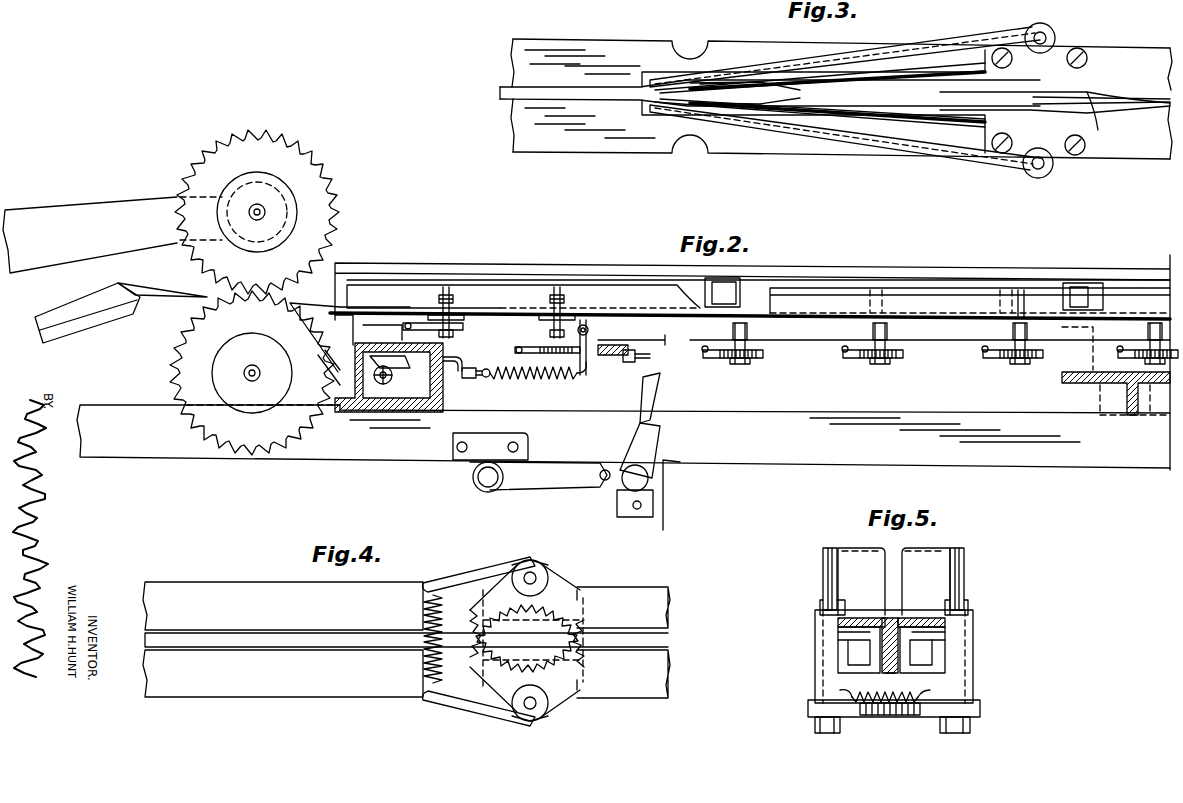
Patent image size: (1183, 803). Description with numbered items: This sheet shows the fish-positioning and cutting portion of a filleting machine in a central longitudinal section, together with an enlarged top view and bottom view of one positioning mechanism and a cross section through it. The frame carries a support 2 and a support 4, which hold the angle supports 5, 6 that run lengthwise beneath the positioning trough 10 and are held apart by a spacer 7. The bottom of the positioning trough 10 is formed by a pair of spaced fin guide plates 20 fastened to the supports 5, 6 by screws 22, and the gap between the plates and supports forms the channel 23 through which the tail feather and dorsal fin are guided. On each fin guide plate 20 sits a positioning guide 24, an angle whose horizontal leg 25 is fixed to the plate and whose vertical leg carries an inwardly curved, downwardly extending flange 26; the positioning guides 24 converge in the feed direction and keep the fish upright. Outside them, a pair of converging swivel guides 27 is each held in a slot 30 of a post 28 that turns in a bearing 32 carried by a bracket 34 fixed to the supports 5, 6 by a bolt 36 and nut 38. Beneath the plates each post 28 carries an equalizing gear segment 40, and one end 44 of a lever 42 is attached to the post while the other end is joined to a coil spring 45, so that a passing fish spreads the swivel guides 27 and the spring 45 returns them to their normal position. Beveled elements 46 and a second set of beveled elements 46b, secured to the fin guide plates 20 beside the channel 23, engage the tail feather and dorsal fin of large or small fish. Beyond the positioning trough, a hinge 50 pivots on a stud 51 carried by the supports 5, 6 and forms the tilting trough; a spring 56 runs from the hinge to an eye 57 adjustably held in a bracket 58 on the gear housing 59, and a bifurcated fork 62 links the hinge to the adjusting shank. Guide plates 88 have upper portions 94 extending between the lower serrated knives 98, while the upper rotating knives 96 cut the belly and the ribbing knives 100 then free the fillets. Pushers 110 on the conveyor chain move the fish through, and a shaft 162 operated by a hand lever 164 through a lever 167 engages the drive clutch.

In FIG. 2, the support 2 is at (1087, 385).
In FIG. 2, the support 4 is at (636, 354).
In FIG. 2, the angle support 5 is at (812, 334).
In FIG. 5, the angle support 5 is at (836, 630).
In FIG. 2, the angle support 6 is at (666, 338).
In FIG. 5, the angle support 6 is at (946, 632).
In FIG. 3, the spacer 7 is at (831, 131).
In FIG. 4, the spacer 7 is at (413, 638).
In FIG. 5, the spacer 7 is at (888, 679).
In FIG. 2, the positioning trough 10 is at (604, 300).
In FIG. 3, the fin guide plate 20 is at (1128, 62).
In FIG. 4, the fin guide plate 20 is at (240, 592).
In FIG. 5, the fin guide plate 20 is at (856, 618).
In FIG. 3, the screw 22 is at (1067, 60).
In FIG. 3, the channel 23 is at (1135, 98).
In FIG. 5, the channel 23 is at (895, 618).
In FIG. 3, the positioning guide 24 is at (912, 92).
In FIG. 2, the positioning guide 24 is at (960, 310).
In FIG. 3, the horizontal leg 25 is at (887, 62).
In FIG. 3, the flange 26 is at (748, 80).
In FIG. 3, the swivel guide 27 is at (844, 56).
In FIG. 2, the swivel guide 27 is at (912, 295).
In FIG. 5, the swivel guide 27 is at (857, 556).
In FIG. 3, the post 28 is at (1055, 38).
In FIG. 2, the post 28 is at (1021, 290).
In FIG. 4, the post 28 is at (540, 575).
In FIG. 5, the post 28 is at (822, 570).
In FIG. 5, the slot 30 is at (832, 550).
In FIG. 5, the bearing 32 is at (818, 668).
In FIG. 4, the bracket 34 is at (580, 590).
In FIG. 5, the bracket 34 is at (840, 638).
In FIG. 5, the bolt 36 is at (859, 650).
In FIG. 5, the nut 38 is at (922, 650).
In FIG. 2, the equalizing gear segment 40 is at (464, 332).
In FIG. 4, the equalizing gear segment 40 is at (584, 614).
In FIG. 5, the equalizing gear segment 40 is at (882, 718).
In FIG. 4, the lever 42 is at (466, 575).
In FIG. 4, the end of lever 44 is at (530, 560).
In FIG. 5, the end of lever 44 is at (815, 720).
In FIG. 2, the coil spring 45 is at (408, 323).
In FIG. 4, the coil spring 45 is at (420, 665).
In FIG. 5, the coil spring 45 is at (885, 685).
In FIG. 3, the beveled element 46 is at (1098, 110).
In FIG. 3, the beveled element 46b is at (755, 92).
In FIG. 2, the hinge 50 is at (588, 362).
In FIG. 2, the stud 51 is at (588, 325).
In FIG. 2, the spring 56 is at (552, 380).
In FIG. 2, the eye 57 is at (487, 378).
In FIG. 2, the bracket 58 is at (448, 367).
In FIG. 2, the gear housing 59 is at (440, 386).
In FIG. 2, the bifurcated fork 62 is at (582, 378).
In FIG. 2, the guide plate 88 is at (325, 355).
In FIG. 2, the upper portion of guide plate 94 is at (300, 318).
In FIG. 2, the upper rotating knife 96 is at (322, 196).
In FIG. 2, the lower cutting knife 98 is at (185, 360).
In FIG. 2, the ribbing knife 100 is at (73, 300).
In FIG. 2, the pusher 110 is at (737, 288).
In FIG. 2, the shaft 162 is at (475, 487).
In FIG. 2, the hand lever 164 is at (658, 400).
In FIG. 2, the lever 167 is at (556, 478).